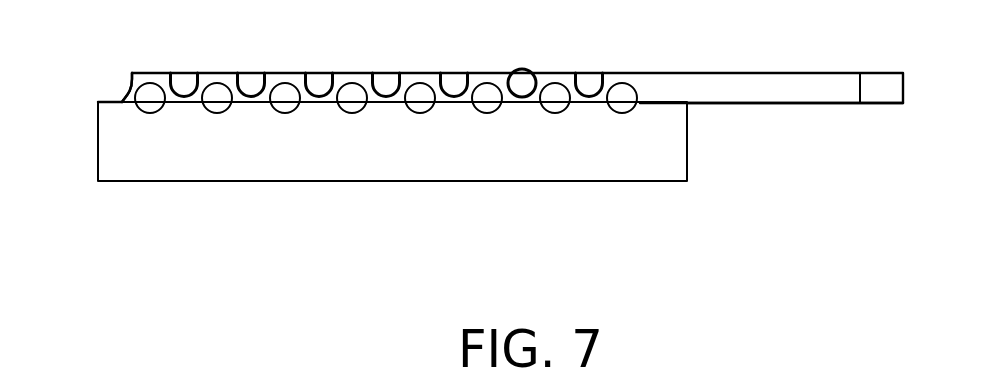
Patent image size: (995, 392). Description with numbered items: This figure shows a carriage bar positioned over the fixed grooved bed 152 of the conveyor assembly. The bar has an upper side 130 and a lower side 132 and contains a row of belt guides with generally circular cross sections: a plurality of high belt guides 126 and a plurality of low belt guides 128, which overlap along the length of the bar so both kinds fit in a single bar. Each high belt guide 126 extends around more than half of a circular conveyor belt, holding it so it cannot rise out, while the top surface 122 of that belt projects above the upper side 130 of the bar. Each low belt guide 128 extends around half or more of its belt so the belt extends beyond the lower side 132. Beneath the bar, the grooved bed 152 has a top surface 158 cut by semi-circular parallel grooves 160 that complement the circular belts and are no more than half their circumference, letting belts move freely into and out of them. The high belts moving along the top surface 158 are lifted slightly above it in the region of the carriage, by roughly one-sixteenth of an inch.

The top surface of belt 122 is at (523, 69).
The high belt guide 126 is at (252, 80).
The low belt guide 128 is at (283, 108).
The upper side of bar 130 is at (718, 73).
The lower side of bar 132 is at (708, 103).
The grooved bed 152 is at (600, 157).
The top surface of grooved bed 158 is at (110, 102).
The parallel grooves 160 is at (148, 108).